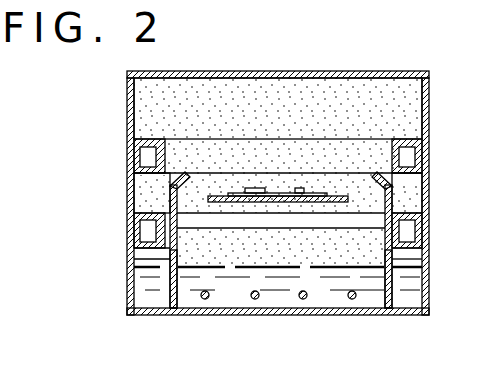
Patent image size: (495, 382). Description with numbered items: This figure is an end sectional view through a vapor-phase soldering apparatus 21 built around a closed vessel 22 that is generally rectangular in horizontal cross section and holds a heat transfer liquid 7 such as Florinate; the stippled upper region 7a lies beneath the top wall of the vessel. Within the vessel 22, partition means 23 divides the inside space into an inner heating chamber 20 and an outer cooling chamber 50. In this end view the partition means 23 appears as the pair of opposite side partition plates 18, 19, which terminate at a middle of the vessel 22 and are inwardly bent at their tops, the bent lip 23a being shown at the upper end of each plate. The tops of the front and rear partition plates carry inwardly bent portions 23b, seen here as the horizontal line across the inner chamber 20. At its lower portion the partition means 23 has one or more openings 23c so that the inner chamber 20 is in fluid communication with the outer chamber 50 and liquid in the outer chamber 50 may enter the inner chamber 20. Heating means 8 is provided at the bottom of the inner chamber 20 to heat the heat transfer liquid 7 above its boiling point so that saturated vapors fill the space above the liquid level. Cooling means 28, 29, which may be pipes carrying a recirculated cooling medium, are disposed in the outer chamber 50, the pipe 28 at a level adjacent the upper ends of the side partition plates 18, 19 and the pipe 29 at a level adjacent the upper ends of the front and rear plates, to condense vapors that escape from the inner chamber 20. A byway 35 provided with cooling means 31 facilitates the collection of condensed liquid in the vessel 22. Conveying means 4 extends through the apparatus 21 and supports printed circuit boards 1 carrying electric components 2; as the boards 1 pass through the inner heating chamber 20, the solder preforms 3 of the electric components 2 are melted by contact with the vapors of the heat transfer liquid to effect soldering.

The printed circuit board 1 is at (278, 192).
The electric component 2 is at (252, 188).
The solder preform 3 is at (248, 193).
The conveying means 4 is at (332, 195).
The heat transfer liquid 7 is at (326, 300).
The insulation layer 7a is at (347, 82).
The heating means 8 is at (300, 299).
The side partition plate 18 is at (130, 254).
The side partition plate 19 is at (389, 280).
The inner heating chamber 20 is at (356, 255).
The soldering apparatus 21 is at (257, 70).
The closed vessel 22 is at (400, 72).
The partition means 23 is at (251, 226).
The tray lip 23a is at (178, 188).
The inwardly bent portion 23b is at (242, 230).
The opening 23c is at (172, 300).
The cooling means 28 is at (135, 151).
The cooling means 29 is at (138, 236).
The cooling means 31 is at (414, 258).
The byway 35 is at (414, 252).
The outer cooling chamber 50 is at (140, 185).